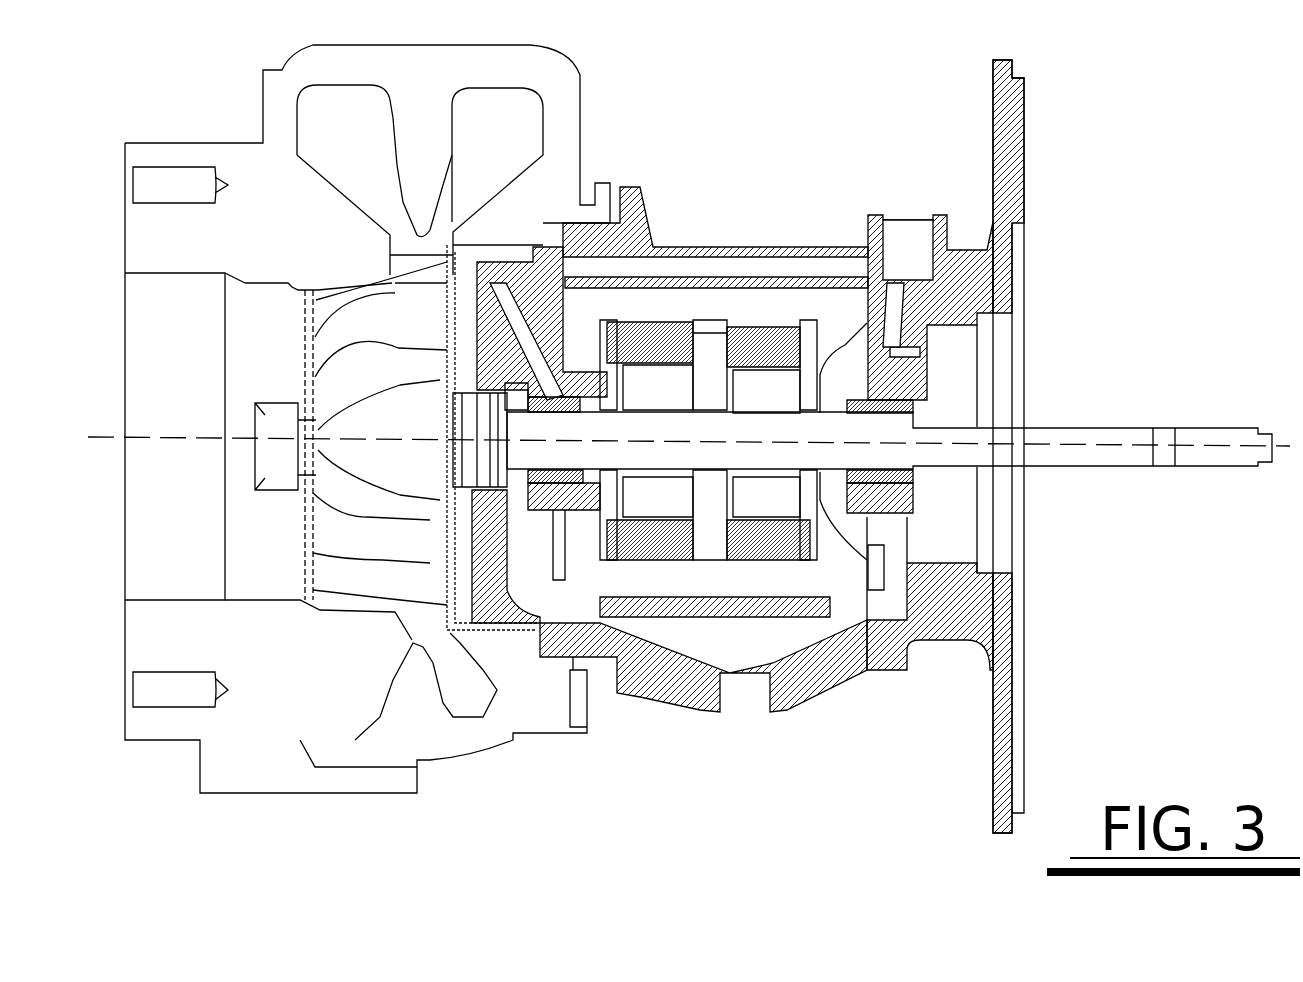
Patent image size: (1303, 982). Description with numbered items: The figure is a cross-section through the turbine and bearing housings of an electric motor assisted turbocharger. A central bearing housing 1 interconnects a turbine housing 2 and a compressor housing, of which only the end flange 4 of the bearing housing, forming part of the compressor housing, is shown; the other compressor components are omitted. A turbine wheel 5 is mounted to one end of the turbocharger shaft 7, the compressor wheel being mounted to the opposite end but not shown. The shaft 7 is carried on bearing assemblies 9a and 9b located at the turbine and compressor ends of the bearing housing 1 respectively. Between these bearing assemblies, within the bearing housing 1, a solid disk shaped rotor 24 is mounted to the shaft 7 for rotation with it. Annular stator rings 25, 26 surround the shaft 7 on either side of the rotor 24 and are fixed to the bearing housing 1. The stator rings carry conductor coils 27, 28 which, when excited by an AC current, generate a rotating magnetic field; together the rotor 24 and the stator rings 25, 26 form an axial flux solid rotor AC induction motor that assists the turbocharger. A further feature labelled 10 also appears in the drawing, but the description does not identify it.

The bearing housing 1 is at (747, 250).
The turbine housing 2 is at (280, 143).
The end flange 4 is at (1013, 163).
The turbine wheel 5 is at (327, 520).
The turbocharger shaft 7 is at (897, 441).
The bearing assembly 9a is at (553, 483).
The bearing assembly 9b is at (897, 502).
The oil passage 10 is at (515, 337).
The solid disk shaped rotor 24 is at (710, 537).
The annular stator ring 25 is at (650, 393).
The annular stator ring 26 is at (780, 392).
The conductor coil 27 is at (643, 550).
The conductor coil 28 is at (777, 533).